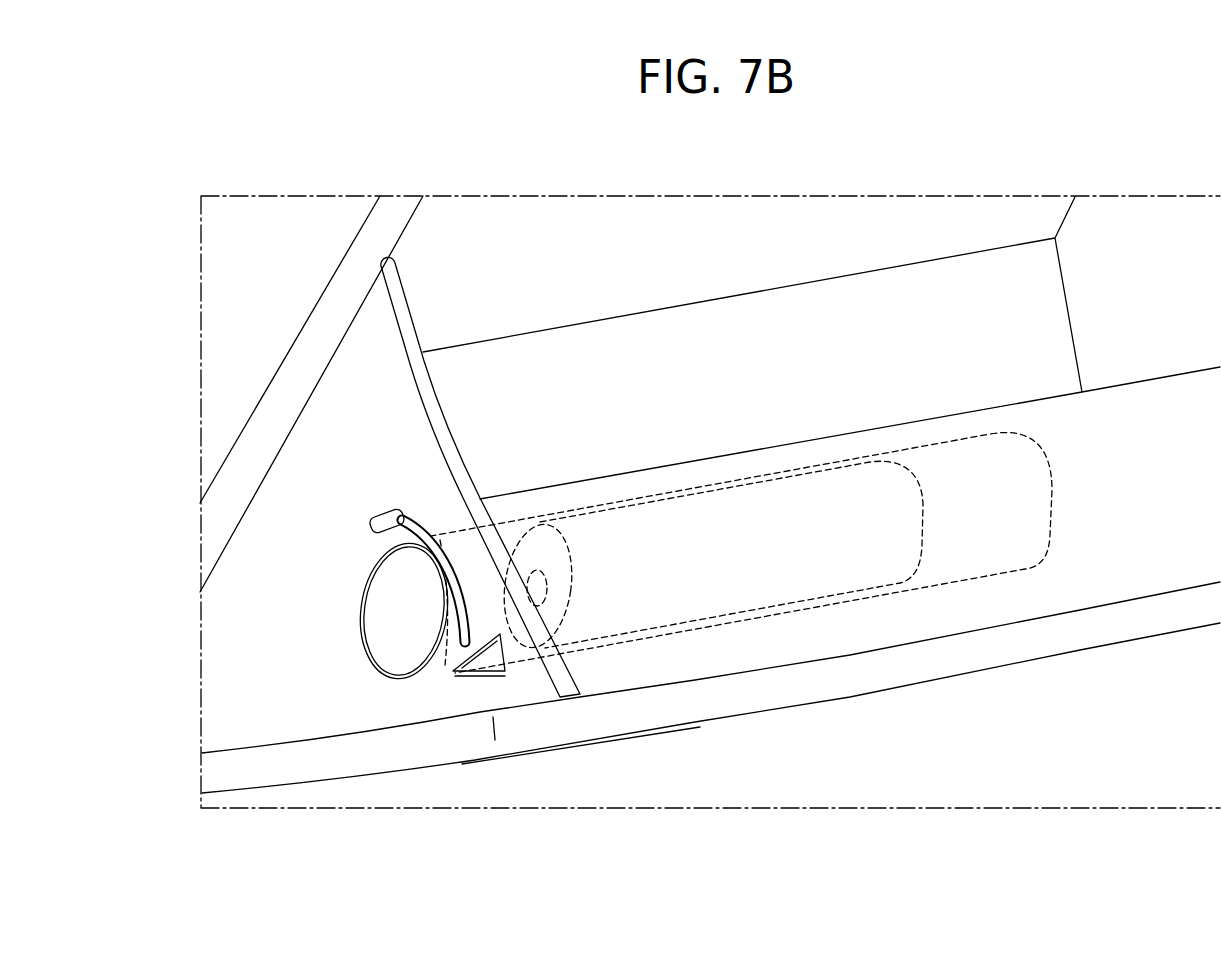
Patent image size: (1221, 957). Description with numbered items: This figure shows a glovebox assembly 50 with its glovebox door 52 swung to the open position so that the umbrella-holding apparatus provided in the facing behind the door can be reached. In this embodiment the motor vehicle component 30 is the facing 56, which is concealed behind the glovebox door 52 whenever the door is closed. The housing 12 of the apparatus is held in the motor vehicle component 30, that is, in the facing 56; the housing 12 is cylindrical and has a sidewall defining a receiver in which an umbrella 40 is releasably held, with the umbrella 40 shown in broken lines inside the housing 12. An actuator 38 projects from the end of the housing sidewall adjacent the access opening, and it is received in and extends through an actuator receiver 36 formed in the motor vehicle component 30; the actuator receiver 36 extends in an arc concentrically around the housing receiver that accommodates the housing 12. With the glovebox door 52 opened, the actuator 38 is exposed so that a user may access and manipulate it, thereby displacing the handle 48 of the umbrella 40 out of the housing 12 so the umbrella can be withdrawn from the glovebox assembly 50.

The housing 12 is at (788, 510).
The motor vehicle component 30 is at (186, 561).
The actuator receiver 36 is at (427, 535).
The actuator 38 is at (373, 507).
The umbrella 40 is at (657, 512).
The handle 48 is at (417, 652).
The glovebox assembly 50 is at (1065, 140).
The glovebox door 52 is at (543, 727).
The facing 56 is at (292, 648).